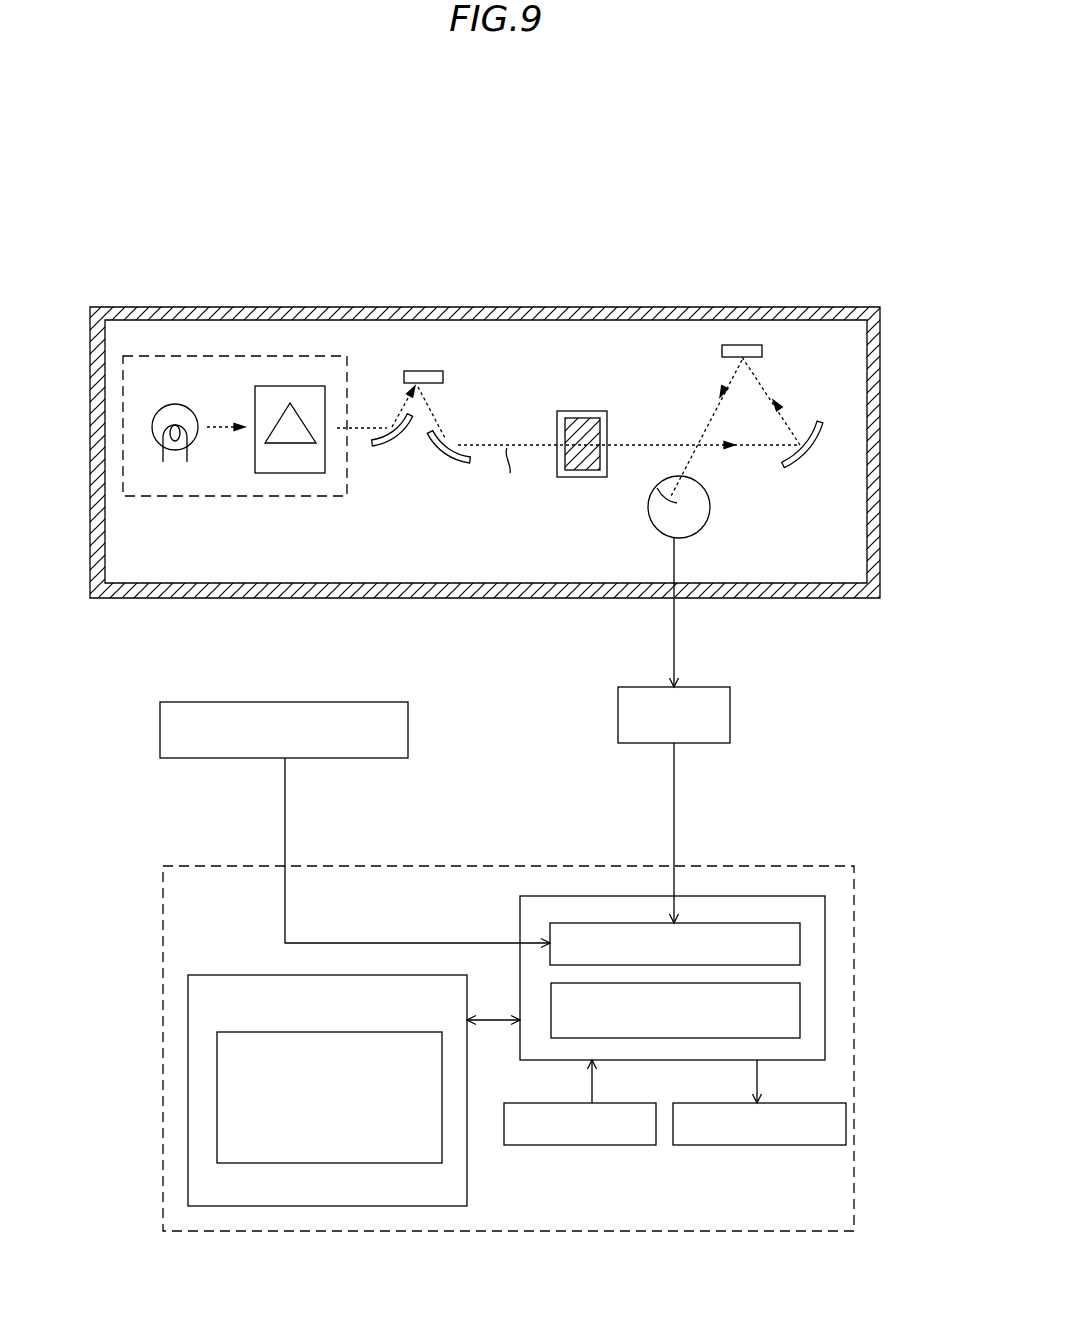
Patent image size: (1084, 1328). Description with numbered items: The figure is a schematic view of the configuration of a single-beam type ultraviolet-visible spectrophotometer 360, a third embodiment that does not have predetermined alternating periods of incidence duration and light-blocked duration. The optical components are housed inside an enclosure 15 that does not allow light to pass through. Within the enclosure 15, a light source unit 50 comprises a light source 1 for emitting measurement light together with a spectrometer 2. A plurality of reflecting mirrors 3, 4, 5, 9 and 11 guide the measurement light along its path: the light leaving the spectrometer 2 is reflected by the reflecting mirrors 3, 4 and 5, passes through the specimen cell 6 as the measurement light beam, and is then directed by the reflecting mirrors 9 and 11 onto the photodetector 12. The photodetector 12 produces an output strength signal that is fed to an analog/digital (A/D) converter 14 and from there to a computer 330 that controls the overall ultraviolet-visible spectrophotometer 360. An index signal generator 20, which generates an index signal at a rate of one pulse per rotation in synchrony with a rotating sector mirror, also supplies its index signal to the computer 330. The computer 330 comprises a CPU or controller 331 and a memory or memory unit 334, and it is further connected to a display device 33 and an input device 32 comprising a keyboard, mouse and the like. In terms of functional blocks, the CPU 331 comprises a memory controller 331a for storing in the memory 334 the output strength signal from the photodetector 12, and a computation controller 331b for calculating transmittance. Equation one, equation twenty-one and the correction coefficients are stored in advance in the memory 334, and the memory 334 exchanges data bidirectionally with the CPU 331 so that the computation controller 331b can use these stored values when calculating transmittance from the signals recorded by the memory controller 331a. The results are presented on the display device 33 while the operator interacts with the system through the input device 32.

The ultraviolet-visible spectrophotometer 360 is at (483, 182).
The light source 1 is at (177, 404).
The light source unit 50 is at (232, 355).
The spectrometer 2 is at (297, 386).
The reflecting mirror 3 is at (395, 447).
The reflecting mirror 4 is at (425, 371).
The reflecting mirror 5 is at (443, 461).
The specimen cell 6 is at (582, 478).
The reflecting mirror 9 is at (808, 456).
The reflecting mirror 11 is at (742, 345).
The photodetector 12 is at (700, 530).
The analog/digital (A/D) converter 14 is at (730, 715).
The enclosure 15 is at (577, 306).
The index signal generator 20 is at (180, 702).
The input device 32 is at (590, 1146).
The display device 33 is at (755, 1146).
The computer 330 is at (163, 887).
The CPU (controller) 331 is at (783, 896).
The memory controller 331a is at (800, 943).
The computation controller 331b is at (800, 1010).
The memory (memory unit) 334 is at (188, 1067).